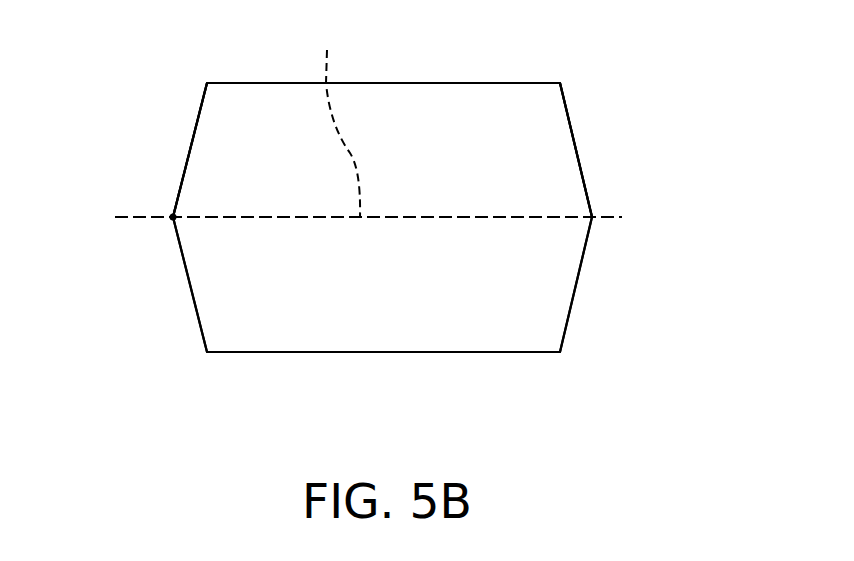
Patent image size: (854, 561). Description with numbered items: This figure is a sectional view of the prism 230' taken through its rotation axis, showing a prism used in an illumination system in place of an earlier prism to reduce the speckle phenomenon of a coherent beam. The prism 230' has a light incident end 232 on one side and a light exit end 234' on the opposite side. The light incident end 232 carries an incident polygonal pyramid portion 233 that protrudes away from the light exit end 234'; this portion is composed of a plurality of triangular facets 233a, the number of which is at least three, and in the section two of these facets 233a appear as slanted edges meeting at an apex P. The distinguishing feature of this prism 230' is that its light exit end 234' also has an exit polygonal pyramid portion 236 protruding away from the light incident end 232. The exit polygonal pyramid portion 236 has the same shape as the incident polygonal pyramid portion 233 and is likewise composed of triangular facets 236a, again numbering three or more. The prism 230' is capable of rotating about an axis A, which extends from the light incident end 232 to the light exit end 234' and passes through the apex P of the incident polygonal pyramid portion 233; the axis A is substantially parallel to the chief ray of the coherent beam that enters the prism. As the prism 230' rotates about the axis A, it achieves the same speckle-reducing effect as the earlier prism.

The prism 230' is at (375, 265).
The light incident end 232 is at (212, 110).
The light exit end 234' is at (579, 118).
The incident polygonal pyramid portion 233 is at (127, 241).
The triangular facets 233a is at (190, 145).
The exit polygonal pyramid portion 236 is at (653, 217).
The triangular facets 236a is at (582, 173).
The axis A is at (340, 118).
The apex P is at (176, 219).